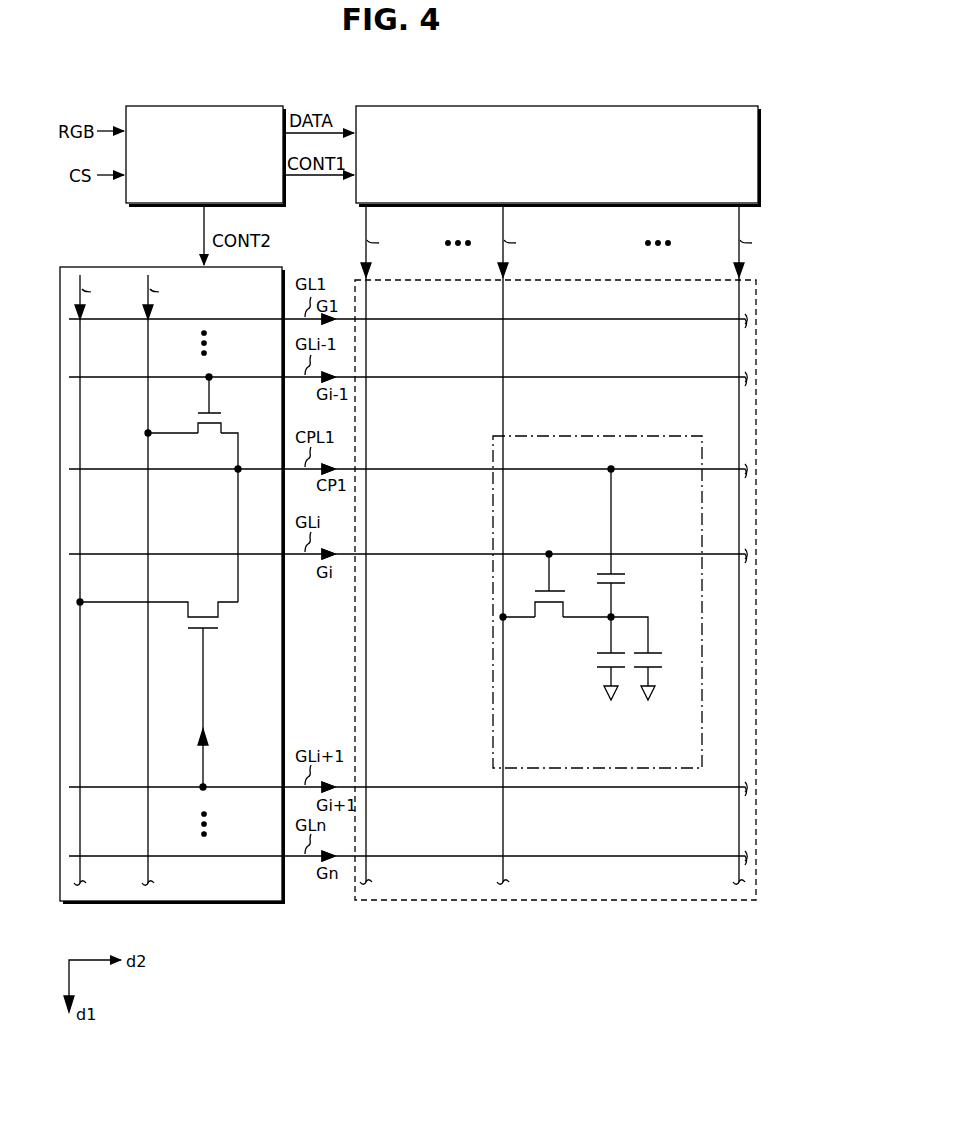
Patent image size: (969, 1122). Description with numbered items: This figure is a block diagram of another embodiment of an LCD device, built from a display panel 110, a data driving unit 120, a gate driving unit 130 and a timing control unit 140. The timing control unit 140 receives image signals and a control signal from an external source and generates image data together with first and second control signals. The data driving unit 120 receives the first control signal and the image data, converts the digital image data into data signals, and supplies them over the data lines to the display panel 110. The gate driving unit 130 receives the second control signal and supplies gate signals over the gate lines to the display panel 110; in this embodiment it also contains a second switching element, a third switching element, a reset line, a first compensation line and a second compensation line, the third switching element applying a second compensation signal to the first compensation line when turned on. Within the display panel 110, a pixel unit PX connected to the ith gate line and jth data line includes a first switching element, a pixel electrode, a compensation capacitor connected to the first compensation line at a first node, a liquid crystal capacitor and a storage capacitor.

The display panel 110 is at (554, 902).
The data driving unit 120 is at (534, 105).
The gate driving unit 130 is at (157, 265).
The timing control unit 140 is at (206, 105).
The pixel unit PX is at (673, 433).